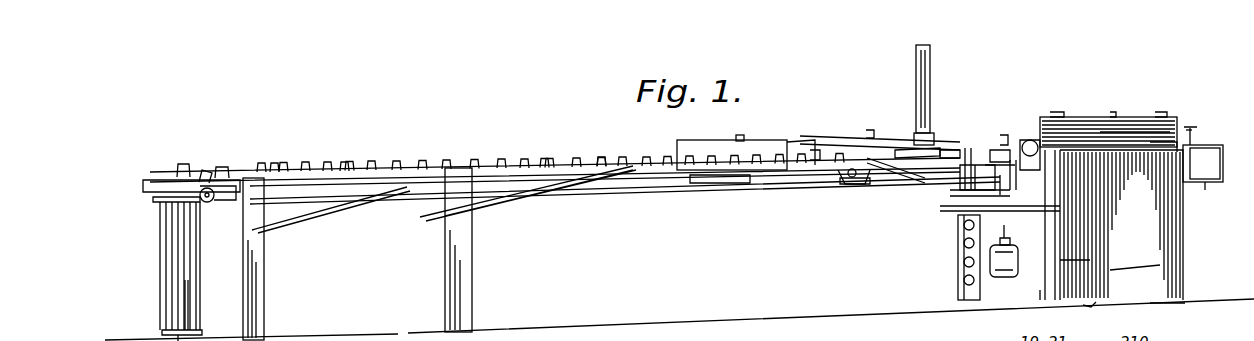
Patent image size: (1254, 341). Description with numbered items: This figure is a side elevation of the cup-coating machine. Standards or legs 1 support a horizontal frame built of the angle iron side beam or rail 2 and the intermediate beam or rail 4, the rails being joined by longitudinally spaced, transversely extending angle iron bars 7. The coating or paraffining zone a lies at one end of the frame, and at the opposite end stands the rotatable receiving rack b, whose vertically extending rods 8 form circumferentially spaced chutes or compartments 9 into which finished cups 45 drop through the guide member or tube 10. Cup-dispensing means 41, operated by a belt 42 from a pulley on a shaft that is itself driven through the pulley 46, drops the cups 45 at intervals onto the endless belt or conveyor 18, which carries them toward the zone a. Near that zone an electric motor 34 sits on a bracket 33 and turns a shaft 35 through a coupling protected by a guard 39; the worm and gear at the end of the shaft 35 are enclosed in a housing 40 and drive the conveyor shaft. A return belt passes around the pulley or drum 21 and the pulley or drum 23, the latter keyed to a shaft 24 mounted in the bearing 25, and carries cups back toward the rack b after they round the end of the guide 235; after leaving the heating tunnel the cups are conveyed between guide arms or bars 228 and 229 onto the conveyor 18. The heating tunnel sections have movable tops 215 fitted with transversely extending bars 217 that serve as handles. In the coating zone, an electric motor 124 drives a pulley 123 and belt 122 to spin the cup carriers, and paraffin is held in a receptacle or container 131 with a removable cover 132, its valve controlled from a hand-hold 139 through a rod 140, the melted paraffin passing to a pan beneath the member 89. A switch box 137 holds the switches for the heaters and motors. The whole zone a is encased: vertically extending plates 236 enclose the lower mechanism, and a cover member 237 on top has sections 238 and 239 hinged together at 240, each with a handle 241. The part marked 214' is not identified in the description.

The standards or legs 1 is at (258, 260).
The angle iron side beam or rail 2 is at (542, 160).
The intermediate beam or rail 4 is at (905, 150).
The transversely extending angle iron bars 7 is at (1014, 158).
The vertically extending rods 8 is at (160, 290).
The chutes or compartments 9 is at (165, 217).
The receiving rack b is at (172, 250).
The guide member or tube 10 is at (184, 172).
The endless belt or conveyor 18 is at (880, 186).
The pulley or drum 21 is at (216, 204).
The pulley or drum 23 is at (862, 184).
The shaft 24 is at (855, 190).
The bearing 25 is at (848, 186).
The bracket 33 is at (958, 210).
The electric motor 34 is at (960, 200).
The shaft 35 is at (1004, 148).
The guard 39 is at (980, 148).
The housing 40 is at (1036, 140).
The cup dispensing means 41 is at (935, 135).
The belt 42 is at (950, 148).
The cups or receptacles 45 is at (170, 310).
The pulley 46 is at (1030, 140).
The member 89 is at (1080, 258).
The belt 122 is at (1000, 225).
The pulley 123 is at (960, 236).
The electric motor 124 is at (1003, 278).
The receptacle or container 131 is at (1205, 188).
The removable cover 132 is at (1200, 147).
The switch box 137 is at (958, 258).
The hand-hold 139 is at (1191, 128).
The rod 140 is at (1192, 128).
The guide 214' is at (902, 120).
The movable top 215 is at (870, 135).
The transversely extending bar 217 is at (742, 140).
The guide arm or bar 228 is at (272, 170).
The guide bar or arm 229 is at (342, 168).
The guide 235 is at (747, 183).
The vertically extending plates 236 is at (1150, 275).
The cover member 237 is at (1160, 125).
The section 238 is at (1086, 117).
The section 239 is at (1135, 120).
The hinge connection 240 is at (1115, 112).
The handle 241 is at (1060, 112).
The coating or paraffining zone a is at (1160, 226).